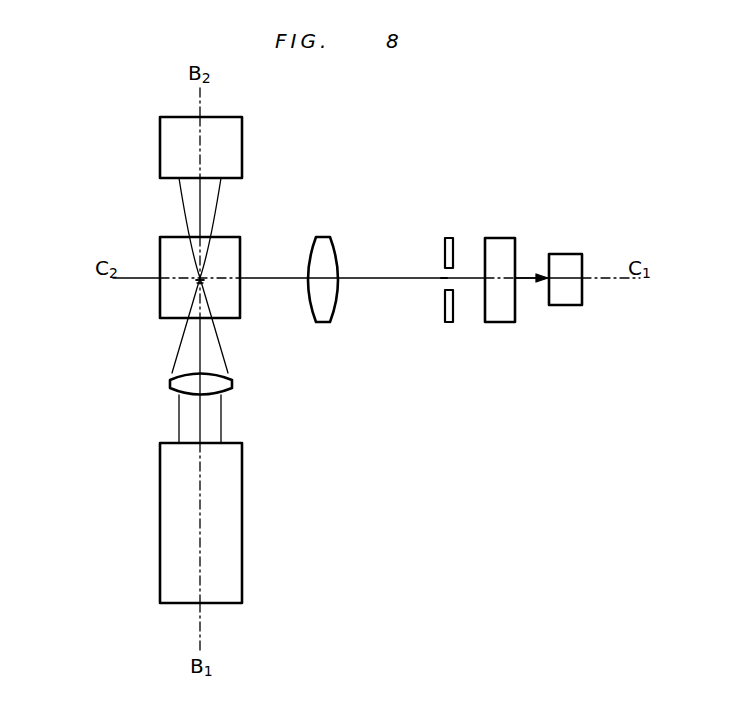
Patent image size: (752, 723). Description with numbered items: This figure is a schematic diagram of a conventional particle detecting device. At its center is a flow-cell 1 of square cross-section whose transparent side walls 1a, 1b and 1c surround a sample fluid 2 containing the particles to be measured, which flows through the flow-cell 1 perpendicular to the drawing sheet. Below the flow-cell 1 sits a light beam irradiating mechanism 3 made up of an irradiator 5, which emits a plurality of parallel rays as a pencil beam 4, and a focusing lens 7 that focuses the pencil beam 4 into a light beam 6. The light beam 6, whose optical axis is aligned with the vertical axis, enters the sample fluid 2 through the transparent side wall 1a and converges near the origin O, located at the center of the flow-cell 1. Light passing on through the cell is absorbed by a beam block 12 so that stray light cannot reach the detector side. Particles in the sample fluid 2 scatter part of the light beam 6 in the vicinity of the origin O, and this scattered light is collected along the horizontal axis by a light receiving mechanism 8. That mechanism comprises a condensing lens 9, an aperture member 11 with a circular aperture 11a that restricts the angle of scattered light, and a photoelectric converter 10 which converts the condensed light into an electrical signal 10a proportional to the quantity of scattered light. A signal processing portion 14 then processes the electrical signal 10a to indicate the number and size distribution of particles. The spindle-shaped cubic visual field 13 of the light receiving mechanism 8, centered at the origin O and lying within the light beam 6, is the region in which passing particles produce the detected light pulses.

The flow-cell 1 is at (238, 245).
The transparent side wall 1a is at (176, 322).
The transparent side wall 1b is at (215, 237).
The transparent side wall 1c is at (243, 263).
The sample fluid 2 is at (166, 255).
The light beam irradiating mechanism 3 is at (229, 408).
The pencil beam 4 is at (216, 426).
The irradiator 5 is at (236, 488).
The light beam 6 is at (208, 348).
The focusing lens 7 is at (232, 383).
The light receiving mechanism 8 is at (370, 268).
The condensing lens 9 is at (318, 240).
The photoelectric converter 10 is at (498, 246).
The electrical signal 10a is at (527, 278).
The aperture member 11 is at (450, 238).
The circular aperture 11a is at (440, 276).
The beam block 12 is at (232, 146).
The cubic visual field 13 is at (200, 282).
The signal processing portion 14 is at (568, 258).
The origin O is at (204, 282).